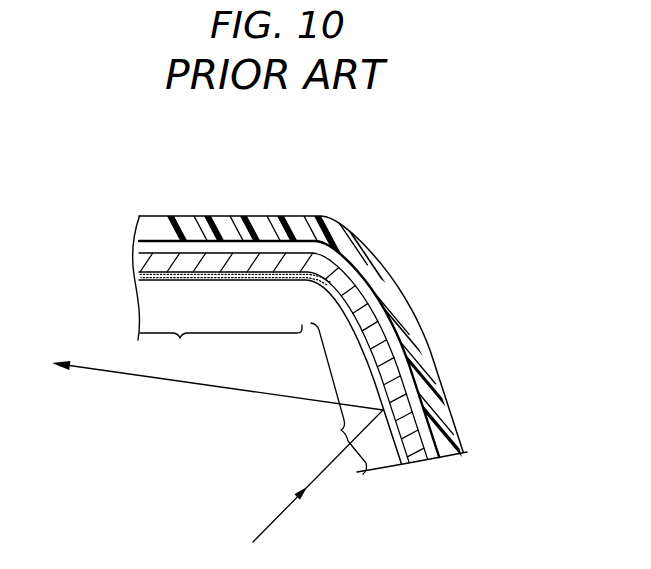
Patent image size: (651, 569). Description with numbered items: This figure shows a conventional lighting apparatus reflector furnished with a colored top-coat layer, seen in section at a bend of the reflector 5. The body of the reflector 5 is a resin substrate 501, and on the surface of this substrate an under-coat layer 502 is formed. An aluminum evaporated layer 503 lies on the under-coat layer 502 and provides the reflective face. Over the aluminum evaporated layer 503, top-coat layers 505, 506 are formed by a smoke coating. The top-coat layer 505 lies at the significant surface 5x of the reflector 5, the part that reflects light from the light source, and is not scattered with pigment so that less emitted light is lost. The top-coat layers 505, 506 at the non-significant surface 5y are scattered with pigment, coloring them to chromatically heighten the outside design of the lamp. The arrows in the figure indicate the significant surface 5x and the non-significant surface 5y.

The reflector 5 is at (283, 351).
The resin substrate 501 is at (327, 309).
The under-coat layer 502 is at (362, 294).
The aluminum evaporated layer 503 is at (421, 358).
The top-coat layer 505 is at (363, 352).
The top-coat layer 506 is at (270, 369).
The significant surface 5x is at (318, 432).
The non-significant surface 5y is at (217, 367).